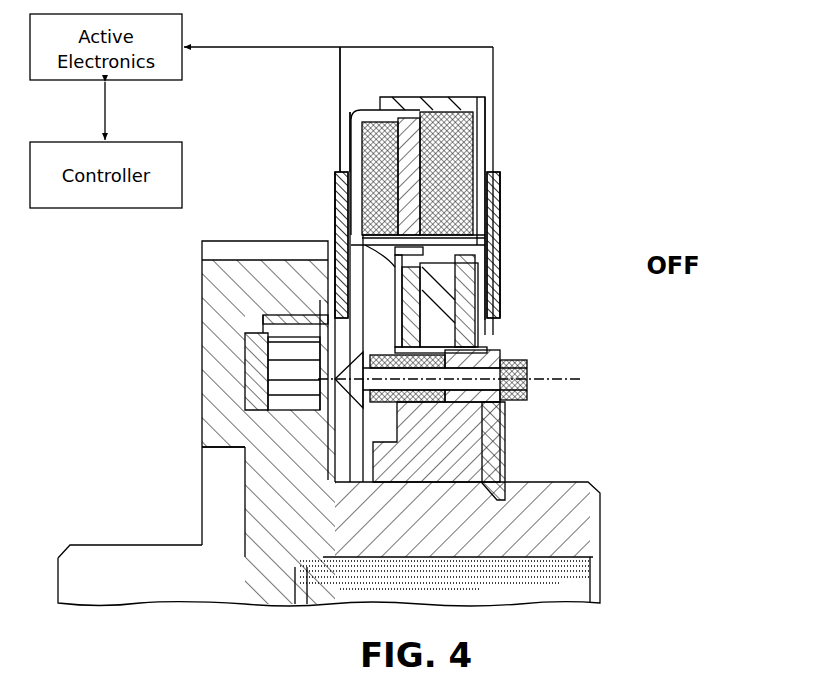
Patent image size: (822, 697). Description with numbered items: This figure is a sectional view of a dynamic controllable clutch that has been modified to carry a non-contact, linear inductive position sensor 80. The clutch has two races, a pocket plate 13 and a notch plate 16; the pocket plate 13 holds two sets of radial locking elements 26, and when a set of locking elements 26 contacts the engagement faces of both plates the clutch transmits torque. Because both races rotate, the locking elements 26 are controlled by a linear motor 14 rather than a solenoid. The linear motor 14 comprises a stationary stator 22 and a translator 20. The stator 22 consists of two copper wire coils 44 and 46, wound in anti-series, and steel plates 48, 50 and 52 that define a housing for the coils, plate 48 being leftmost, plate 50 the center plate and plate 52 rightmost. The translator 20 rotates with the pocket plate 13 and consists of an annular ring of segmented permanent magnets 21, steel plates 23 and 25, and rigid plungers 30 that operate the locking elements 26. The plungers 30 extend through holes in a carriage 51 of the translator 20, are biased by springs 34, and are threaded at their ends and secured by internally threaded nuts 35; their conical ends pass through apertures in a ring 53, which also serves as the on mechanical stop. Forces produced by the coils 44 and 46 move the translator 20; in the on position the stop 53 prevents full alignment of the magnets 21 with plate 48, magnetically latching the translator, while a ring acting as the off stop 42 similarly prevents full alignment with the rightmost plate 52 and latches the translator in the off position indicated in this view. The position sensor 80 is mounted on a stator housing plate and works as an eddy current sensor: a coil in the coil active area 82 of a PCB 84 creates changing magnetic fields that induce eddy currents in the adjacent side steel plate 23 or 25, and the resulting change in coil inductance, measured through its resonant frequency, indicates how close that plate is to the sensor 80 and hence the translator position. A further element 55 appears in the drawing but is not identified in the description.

The pocket plate 13 is at (598, 482).
The linear motor 14 is at (442, 72).
The notch plate 16 is at (200, 294).
The translator 20 is at (490, 332).
The segmented permanent magnets 21 is at (480, 247).
The stator 22 is at (490, 103).
The steel plate 23 is at (327, 263).
The steel plate 25 is at (480, 275).
The locking elements 26 is at (266, 332).
The plungers 30 is at (490, 355).
The springs 34 is at (500, 405).
The nuts 35 is at (527, 370).
The off stop 42 is at (505, 470).
The coil 44 is at (342, 95).
The coil 46 is at (496, 212).
The steel plate 48 is at (347, 168).
The steel plate 50 is at (387, 97).
The carriage 51 is at (245, 513).
The steel plate 52 is at (488, 140).
The ring 53 is at (335, 480).
The spring 55 is at (300, 320).
The position sensor 80 is at (333, 176).
The coil active area 82 is at (338, 230).
The PCB 84 is at (335, 200).